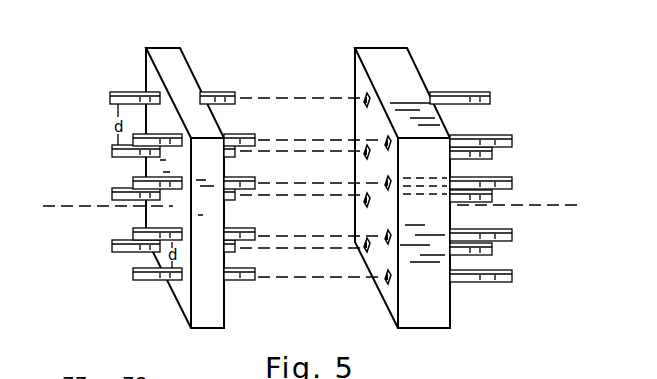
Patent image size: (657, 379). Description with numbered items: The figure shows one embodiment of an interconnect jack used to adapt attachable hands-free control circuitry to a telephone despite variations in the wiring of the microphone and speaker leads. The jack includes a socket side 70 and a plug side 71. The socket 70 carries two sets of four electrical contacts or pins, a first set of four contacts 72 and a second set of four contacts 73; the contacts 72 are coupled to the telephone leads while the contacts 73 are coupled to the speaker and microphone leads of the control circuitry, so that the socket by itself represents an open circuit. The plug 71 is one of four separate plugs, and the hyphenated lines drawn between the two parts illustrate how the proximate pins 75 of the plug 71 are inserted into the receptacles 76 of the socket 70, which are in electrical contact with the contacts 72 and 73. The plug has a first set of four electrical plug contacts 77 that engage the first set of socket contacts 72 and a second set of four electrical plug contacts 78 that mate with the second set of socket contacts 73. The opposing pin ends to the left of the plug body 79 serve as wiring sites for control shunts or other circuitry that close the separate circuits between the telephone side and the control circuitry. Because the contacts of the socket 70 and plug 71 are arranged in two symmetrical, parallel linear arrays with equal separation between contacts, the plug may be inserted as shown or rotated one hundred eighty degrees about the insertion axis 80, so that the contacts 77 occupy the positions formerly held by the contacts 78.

The socket side 70 is at (412, 63).
The plug side 71 is at (160, 52).
The first set of four electrical contacts 72 is at (490, 98).
The second set of four electrical contacts 73 is at (512, 138).
The pins 75 is at (234, 86).
The receptacles 76 is at (350, 88).
The first set of four electrical plug contacts 77 is at (113, 243).
The second set of four electrical plug contacts 78 is at (163, 180).
The plug body 79 is at (207, 322).
The insertion axis 80 is at (311, 207).